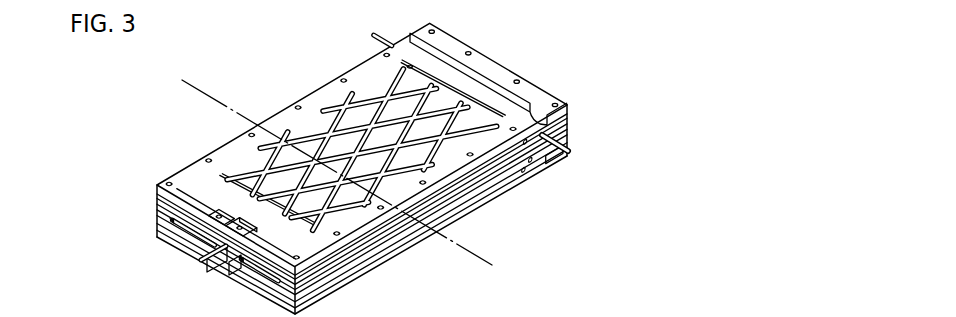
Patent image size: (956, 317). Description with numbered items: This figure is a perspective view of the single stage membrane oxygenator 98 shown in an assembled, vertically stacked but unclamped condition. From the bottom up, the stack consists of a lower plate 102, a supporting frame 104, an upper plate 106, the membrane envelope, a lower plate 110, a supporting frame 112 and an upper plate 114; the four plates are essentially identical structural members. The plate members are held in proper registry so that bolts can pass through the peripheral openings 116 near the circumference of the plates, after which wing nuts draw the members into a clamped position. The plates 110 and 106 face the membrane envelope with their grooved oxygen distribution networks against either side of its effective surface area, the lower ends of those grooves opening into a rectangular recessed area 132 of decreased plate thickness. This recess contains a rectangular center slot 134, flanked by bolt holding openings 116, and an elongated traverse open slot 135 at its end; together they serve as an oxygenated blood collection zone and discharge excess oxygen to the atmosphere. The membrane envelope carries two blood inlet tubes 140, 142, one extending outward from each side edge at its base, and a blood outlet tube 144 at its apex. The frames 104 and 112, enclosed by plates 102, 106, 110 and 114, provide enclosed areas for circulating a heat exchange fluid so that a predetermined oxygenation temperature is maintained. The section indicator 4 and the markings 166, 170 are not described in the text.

The single stage membrane oxygenator 98 is at (384, 168).
The lower plate 102 is at (568, 155).
The supporting frame 104 is at (568, 142).
The upper plate 106 is at (573, 131).
The lower plate 110 is at (572, 119).
The supporting frame 112 is at (565, 110).
The upper plate 114 is at (535, 96).
The openings 116 is at (298, 102).
The recessed area 132 is at (290, 242).
The rectangular center slot 134 is at (237, 211).
The elongated traverse open slot 135 is at (253, 277).
The blood inlet tube 140 is at (558, 160).
The blood inlet tube 142 is at (369, 42).
The blood outlet tube 144 is at (204, 265).
The section line 4- 4 is at (528, 237).
The element 166 is at (547, 312).
The element 170 is at (632, 312).